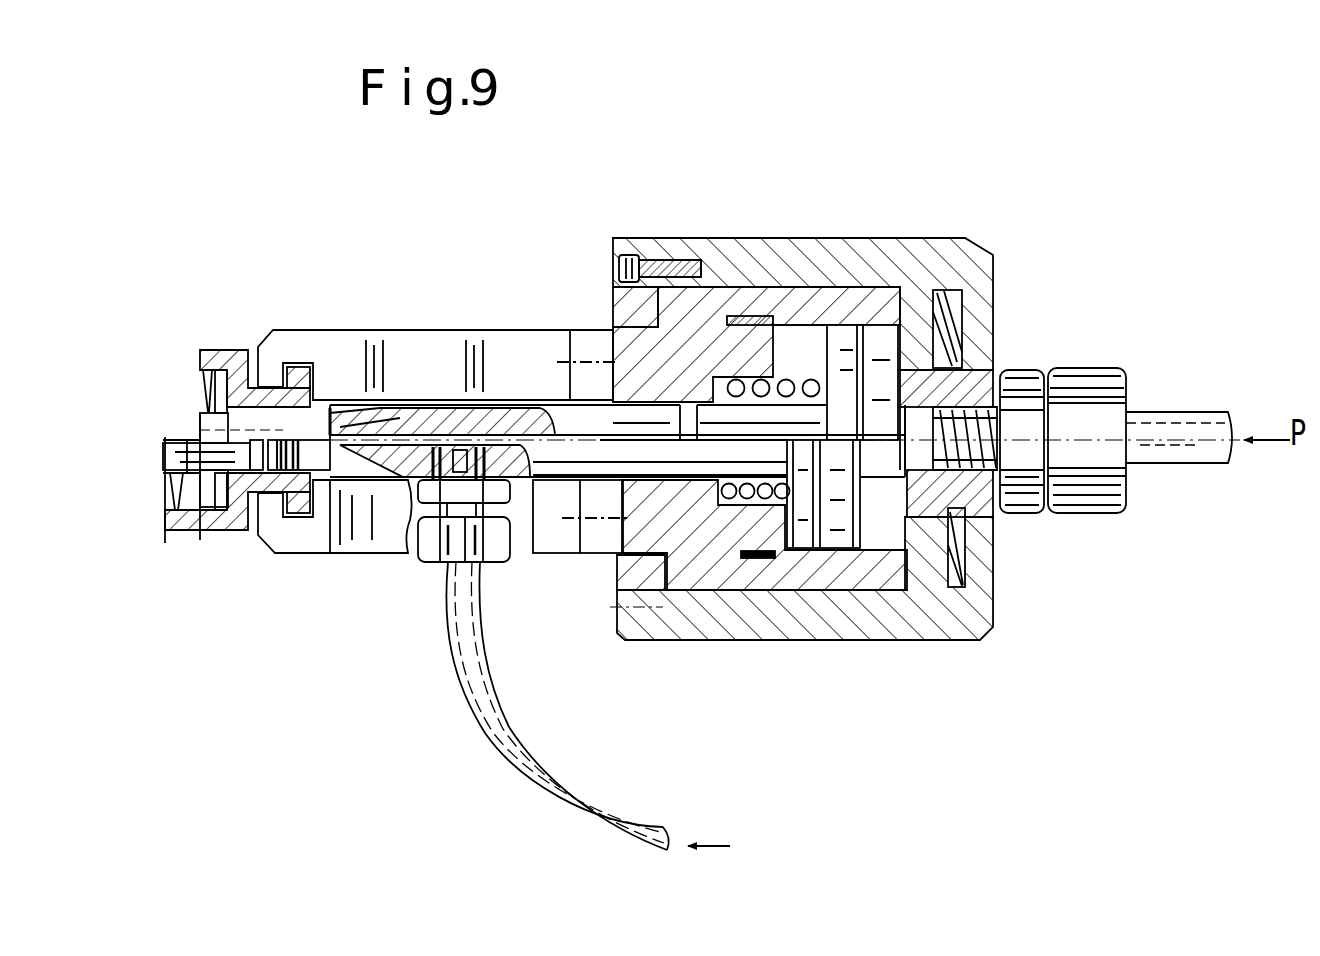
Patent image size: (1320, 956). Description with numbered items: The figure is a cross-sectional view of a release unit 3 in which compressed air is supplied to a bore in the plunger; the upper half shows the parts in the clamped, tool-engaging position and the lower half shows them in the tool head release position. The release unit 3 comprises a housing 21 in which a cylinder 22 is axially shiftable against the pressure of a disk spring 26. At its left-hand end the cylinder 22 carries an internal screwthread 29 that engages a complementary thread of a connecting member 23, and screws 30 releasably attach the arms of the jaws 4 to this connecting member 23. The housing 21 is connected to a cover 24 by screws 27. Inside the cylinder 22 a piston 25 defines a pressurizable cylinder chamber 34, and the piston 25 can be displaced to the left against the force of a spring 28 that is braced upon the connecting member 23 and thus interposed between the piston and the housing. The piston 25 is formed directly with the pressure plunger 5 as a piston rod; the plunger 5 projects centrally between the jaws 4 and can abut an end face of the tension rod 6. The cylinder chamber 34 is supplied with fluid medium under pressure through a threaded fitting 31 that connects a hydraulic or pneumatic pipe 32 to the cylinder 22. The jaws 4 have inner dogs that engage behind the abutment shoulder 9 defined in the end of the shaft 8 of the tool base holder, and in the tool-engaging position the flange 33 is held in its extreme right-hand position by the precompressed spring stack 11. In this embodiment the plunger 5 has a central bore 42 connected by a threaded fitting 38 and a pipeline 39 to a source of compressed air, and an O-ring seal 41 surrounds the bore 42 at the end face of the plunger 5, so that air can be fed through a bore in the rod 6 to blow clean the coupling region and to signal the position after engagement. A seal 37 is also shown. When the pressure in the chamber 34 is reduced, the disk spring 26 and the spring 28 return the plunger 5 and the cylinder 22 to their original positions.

The release unit 3 is at (1026, 760).
The jaws 4 is at (440, 391).
The pressure plunger 5 is at (607, 477).
The tension rod 6 is at (219, 478).
The shaft 8 is at (237, 388).
The abutment ring or shoulder 9 is at (285, 510).
The spring stack 11 is at (169, 436).
The housing 21 is at (833, 397).
The cylinder 22 is at (756, 264).
The connecting member 23 is at (762, 603).
The cover 24 is at (597, 301).
The piston 25 is at (842, 345).
The disk spring 26 is at (936, 236).
The screws 27 is at (620, 239).
The spring 28 is at (771, 554).
The screwthread 29 is at (807, 529).
The screws 30 is at (542, 373).
The threaded fitting 31 is at (1044, 388).
The pipe 32 is at (1140, 399).
The shoulder or flange 33 is at (166, 412).
The cylinder chamber 34 is at (1019, 468).
The seal 37 is at (1006, 570).
The threaded fitting 38 is at (457, 585).
The pipeline 39 is at (557, 706).
The O-ring seal 41 is at (433, 342).
The central bore 42 is at (430, 547).